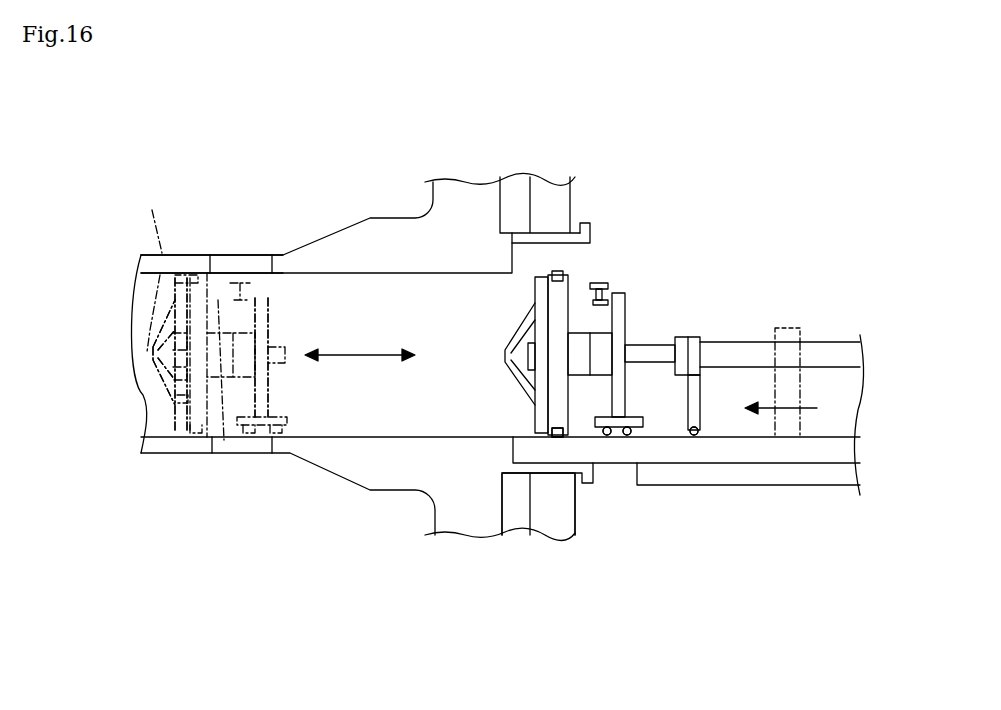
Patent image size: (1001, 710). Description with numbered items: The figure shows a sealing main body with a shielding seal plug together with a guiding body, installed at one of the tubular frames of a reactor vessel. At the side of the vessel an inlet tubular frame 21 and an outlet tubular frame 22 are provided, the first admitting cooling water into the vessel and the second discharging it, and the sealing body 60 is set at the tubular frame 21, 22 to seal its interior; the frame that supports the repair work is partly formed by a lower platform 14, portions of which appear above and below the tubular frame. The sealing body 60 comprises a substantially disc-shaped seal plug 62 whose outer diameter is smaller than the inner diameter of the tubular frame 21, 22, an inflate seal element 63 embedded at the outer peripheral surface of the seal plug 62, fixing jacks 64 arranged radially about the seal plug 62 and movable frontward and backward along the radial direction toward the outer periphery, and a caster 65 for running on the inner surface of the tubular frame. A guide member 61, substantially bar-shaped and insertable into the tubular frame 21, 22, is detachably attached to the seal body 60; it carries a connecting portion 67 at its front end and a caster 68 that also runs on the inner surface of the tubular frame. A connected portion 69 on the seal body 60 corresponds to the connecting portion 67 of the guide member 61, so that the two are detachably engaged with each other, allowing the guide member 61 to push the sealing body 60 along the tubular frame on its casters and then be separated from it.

The lower platform 14 is at (553, 208).
The inlet tubular frame 21 is at (470, 517).
The outlet tubular frame 22 is at (538, 504).
The sealing body 60 is at (573, 272).
The guide member 61 is at (275, 345).
The seal plug 62 is at (165, 395).
The inflate seal element 63 is at (198, 255).
The fixing jacks 64 is at (155, 295).
The caster 65 is at (561, 440).
The connecting portion 67 is at (277, 340).
The caster 68 is at (694, 440).
The connected portion 69 is at (220, 455).